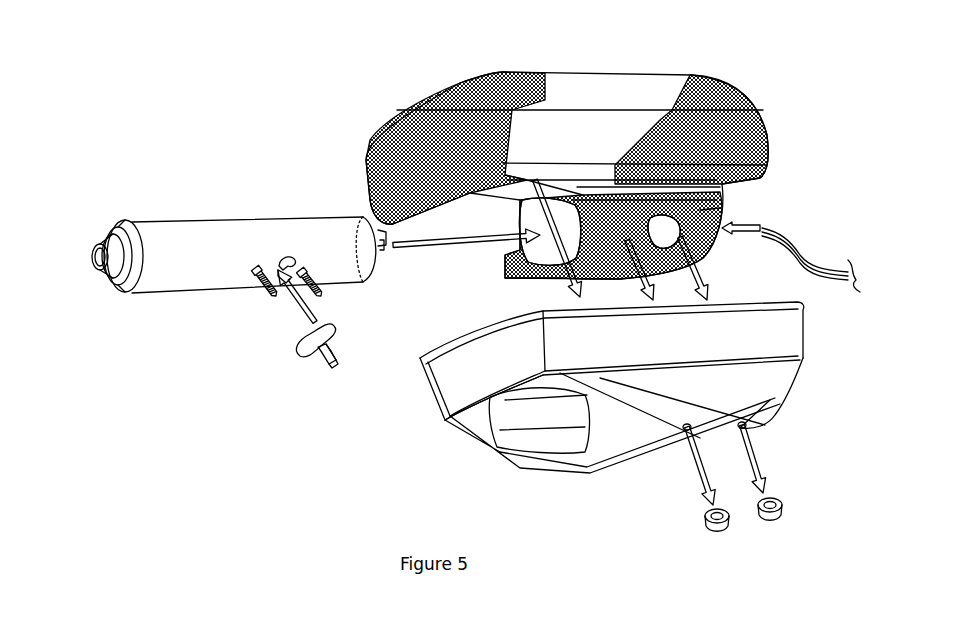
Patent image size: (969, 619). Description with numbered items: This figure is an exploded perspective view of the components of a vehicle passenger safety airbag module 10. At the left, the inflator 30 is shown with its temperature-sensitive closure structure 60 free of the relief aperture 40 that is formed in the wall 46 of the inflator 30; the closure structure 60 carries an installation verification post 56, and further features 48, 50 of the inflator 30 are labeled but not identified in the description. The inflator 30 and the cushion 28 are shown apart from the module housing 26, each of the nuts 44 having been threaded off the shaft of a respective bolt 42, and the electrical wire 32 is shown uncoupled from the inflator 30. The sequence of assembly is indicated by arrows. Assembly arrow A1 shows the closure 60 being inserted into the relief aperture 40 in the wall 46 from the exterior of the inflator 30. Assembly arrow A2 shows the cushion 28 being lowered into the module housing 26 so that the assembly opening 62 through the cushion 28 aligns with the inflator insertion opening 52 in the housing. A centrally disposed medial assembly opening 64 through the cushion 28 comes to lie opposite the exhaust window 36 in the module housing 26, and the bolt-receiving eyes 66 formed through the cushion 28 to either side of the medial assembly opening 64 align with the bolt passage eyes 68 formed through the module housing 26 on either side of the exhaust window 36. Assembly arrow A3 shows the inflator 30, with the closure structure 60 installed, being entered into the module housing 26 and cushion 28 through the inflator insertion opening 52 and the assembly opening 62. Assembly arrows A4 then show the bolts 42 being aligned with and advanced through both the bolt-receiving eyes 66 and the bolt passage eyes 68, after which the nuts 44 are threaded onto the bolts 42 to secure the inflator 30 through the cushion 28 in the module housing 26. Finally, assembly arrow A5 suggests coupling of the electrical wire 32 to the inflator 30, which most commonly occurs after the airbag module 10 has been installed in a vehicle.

The airbag module 10 is at (190, 86).
The module housing 26 is at (722, 334).
The cushion 28 is at (612, 88).
The inflator 30 is at (95, 264).
The electrical wire 32 is at (806, 243).
The exhaust window 36 is at (740, 412).
The relief aperture 40 is at (288, 258).
The bolts 42 is at (275, 298).
The nuts 44 is at (774, 518).
The wall 46 is at (188, 236).
The canister end 48 is at (162, 276).
The canister rear end 50 is at (364, 262).
The inflator insertion opening 52 is at (530, 466).
The installation verification post 56 is at (340, 372).
The temperature-sensitive closure structure 60 is at (296, 357).
The assembly opening 62 is at (530, 265).
The medial assembly opening 64 is at (710, 208).
The bolt-receiving eyes 66 is at (630, 248).
The bolt passage eyes 68 is at (683, 432).
The assembly arrow A1 is at (292, 300).
The assembly arrow A2 is at (568, 283).
The assembly arrow A3 is at (520, 248).
The assembly arrows A4 is at (735, 470).
The assembly arrow A5 is at (755, 228).